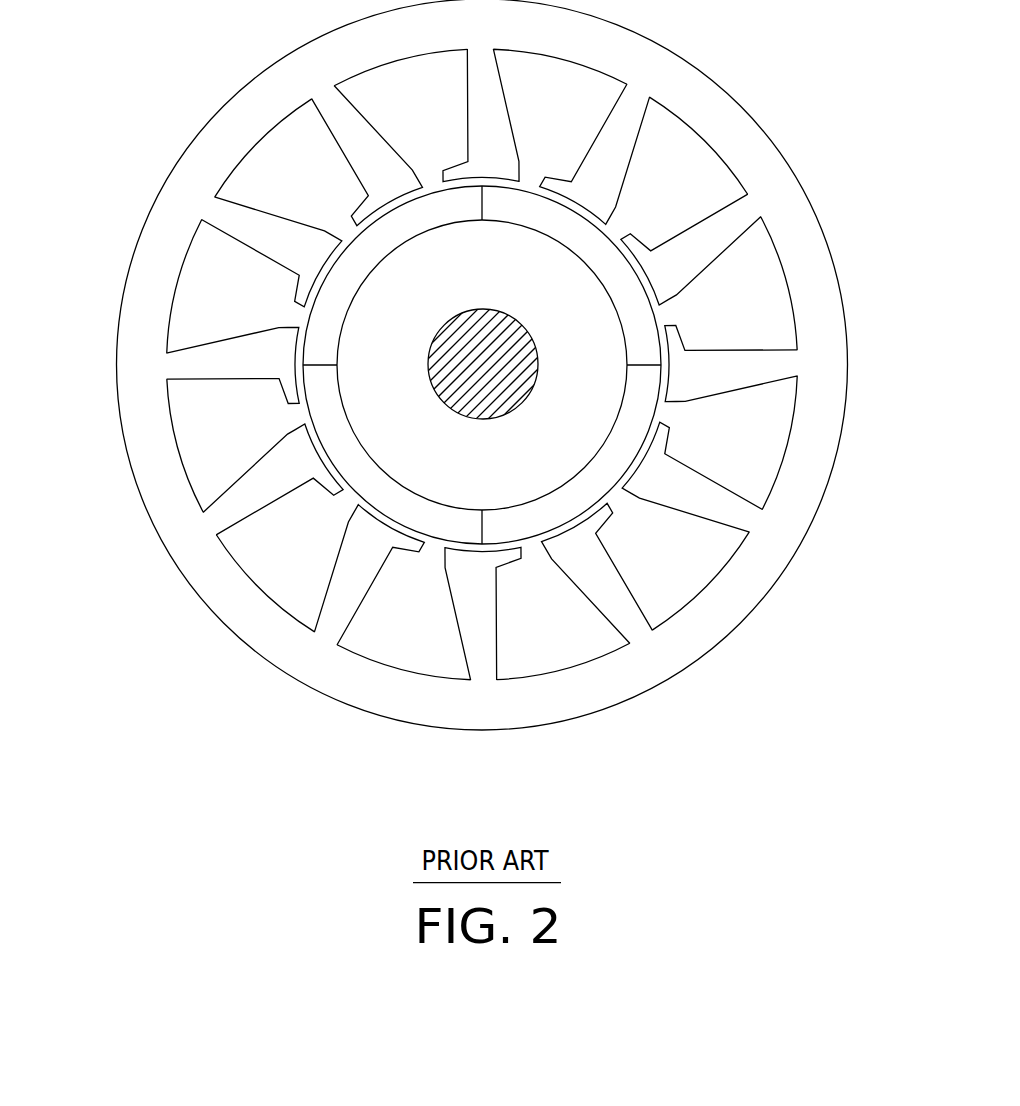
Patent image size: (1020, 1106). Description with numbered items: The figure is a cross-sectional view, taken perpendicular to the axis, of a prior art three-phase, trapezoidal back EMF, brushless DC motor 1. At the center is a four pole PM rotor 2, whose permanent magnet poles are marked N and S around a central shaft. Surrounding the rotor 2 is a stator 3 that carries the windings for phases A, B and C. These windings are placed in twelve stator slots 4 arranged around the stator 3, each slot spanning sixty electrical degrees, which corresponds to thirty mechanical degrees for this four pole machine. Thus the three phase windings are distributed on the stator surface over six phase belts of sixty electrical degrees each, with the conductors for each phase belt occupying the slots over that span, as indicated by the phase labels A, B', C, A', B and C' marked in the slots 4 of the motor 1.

The motor 1 is at (163, 85).
The four pole PM rotor 2 is at (580, 300).
The stator 3 is at (808, 390).
The stator slots 4 is at (237, 163).